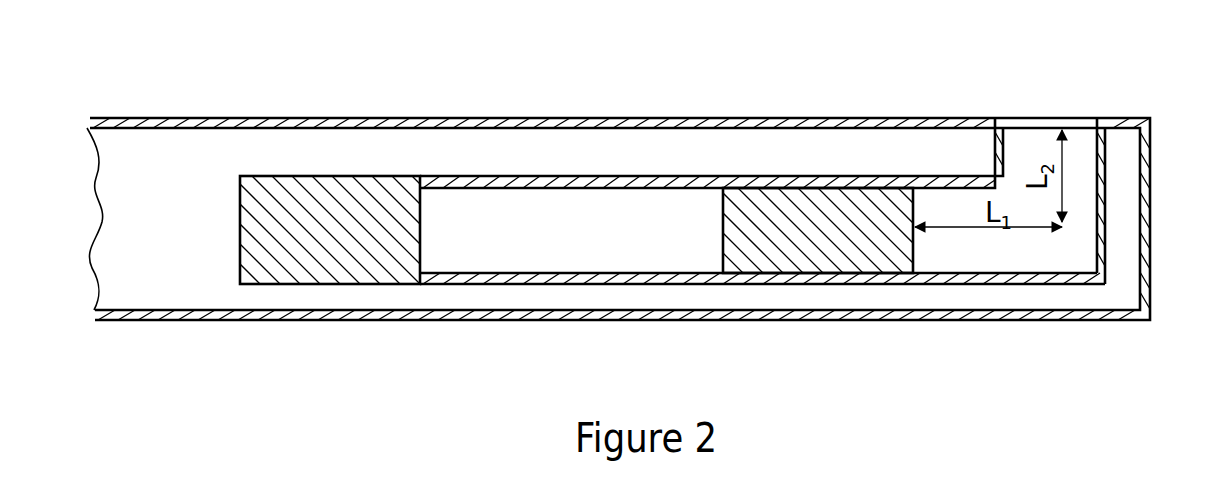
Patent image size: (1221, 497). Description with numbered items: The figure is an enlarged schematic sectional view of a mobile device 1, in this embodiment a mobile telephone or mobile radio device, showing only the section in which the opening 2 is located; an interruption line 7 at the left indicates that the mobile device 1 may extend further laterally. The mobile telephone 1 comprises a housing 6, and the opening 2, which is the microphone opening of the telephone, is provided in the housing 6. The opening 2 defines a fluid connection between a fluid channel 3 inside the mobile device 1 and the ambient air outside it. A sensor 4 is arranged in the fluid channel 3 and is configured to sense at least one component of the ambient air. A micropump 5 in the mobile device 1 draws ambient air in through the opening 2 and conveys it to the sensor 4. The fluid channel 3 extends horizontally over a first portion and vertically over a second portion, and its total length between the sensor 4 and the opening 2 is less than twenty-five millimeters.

The mobile device 1 is at (294, 84).
The opening 2 is at (810, 158).
The fluid channel 3 is at (1103, 247).
The sensor 4 is at (867, 257).
The micropump 5 is at (342, 262).
The housing 6 is at (478, 118).
The interruption line 7 is at (100, 217).